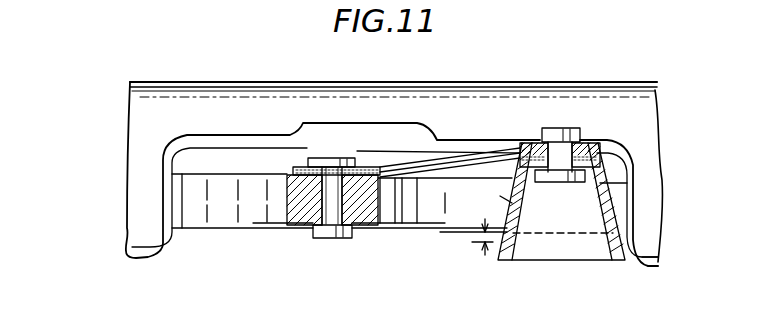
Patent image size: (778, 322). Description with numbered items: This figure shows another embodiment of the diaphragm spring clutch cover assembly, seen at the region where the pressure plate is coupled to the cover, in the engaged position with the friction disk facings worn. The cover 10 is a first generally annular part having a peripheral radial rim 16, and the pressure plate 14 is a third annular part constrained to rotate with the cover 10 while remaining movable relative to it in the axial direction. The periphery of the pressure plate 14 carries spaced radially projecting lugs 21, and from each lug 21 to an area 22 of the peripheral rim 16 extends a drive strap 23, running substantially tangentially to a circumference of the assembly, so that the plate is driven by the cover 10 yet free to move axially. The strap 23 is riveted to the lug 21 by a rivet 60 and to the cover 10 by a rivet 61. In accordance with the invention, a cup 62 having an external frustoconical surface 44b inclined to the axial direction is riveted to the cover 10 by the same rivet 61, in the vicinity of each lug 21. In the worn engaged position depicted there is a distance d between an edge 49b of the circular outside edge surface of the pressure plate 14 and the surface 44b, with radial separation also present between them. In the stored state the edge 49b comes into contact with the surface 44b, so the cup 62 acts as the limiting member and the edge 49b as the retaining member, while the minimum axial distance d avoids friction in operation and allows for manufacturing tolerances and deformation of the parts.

The cover 10 is at (172, 250).
The pressure plate 14 is at (216, 232).
The peripheral radial rim 16 is at (662, 259).
The radially projecting lug 21 is at (367, 213).
The area of peripheral rim 22 is at (510, 140).
The drive strap 23 is at (456, 155).
The external frustoconical surface 44b is at (500, 196).
The edge 49b is at (473, 242).
The rivet 60 is at (328, 158).
The rivet 61 is at (568, 128).
The cup 62 is at (512, 260).
The distance d is at (481, 266).